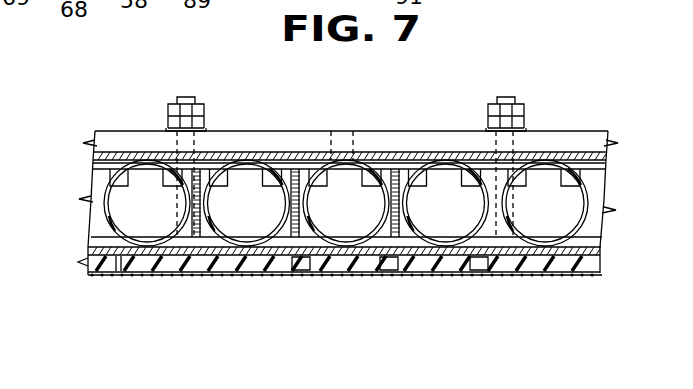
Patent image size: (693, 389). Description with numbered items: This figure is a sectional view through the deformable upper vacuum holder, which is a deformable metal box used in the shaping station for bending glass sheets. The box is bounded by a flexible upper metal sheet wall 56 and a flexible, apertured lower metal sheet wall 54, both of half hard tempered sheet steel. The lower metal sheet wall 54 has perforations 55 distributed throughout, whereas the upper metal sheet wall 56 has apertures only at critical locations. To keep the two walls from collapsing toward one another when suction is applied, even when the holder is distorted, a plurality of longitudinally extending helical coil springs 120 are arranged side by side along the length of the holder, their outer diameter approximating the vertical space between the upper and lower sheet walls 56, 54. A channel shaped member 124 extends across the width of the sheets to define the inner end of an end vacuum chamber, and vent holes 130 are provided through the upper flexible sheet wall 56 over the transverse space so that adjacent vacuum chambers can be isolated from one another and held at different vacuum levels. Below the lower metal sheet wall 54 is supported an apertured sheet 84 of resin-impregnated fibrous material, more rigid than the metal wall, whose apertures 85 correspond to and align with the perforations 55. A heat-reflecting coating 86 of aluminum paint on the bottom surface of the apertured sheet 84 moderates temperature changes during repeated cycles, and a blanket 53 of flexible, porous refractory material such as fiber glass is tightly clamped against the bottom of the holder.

The blanket 53 is at (406, 274).
The lower metal sheet wall 54 is at (86, 262).
The perforations 55 is at (118, 247).
The upper metal sheet wall 56 is at (281, 151).
The apertured sheet 84 is at (350, 270).
The apertures 85 is at (119, 257).
The heat-reflecting coating 86 is at (258, 272).
The helical coil springs 120 is at (361, 164).
The channel shaped members 124 is at (608, 185).
The vent holes 130 is at (338, 131).